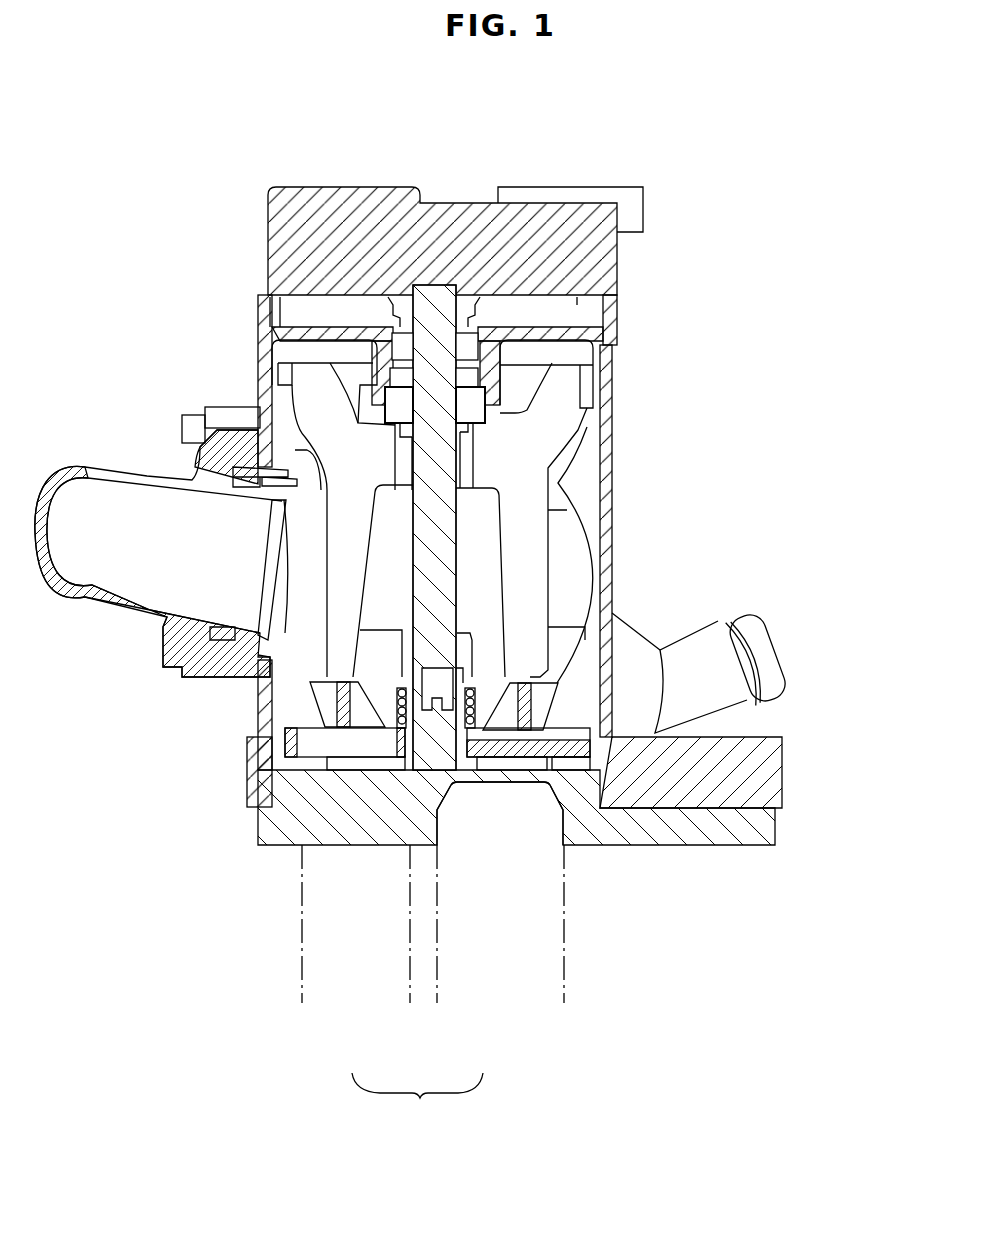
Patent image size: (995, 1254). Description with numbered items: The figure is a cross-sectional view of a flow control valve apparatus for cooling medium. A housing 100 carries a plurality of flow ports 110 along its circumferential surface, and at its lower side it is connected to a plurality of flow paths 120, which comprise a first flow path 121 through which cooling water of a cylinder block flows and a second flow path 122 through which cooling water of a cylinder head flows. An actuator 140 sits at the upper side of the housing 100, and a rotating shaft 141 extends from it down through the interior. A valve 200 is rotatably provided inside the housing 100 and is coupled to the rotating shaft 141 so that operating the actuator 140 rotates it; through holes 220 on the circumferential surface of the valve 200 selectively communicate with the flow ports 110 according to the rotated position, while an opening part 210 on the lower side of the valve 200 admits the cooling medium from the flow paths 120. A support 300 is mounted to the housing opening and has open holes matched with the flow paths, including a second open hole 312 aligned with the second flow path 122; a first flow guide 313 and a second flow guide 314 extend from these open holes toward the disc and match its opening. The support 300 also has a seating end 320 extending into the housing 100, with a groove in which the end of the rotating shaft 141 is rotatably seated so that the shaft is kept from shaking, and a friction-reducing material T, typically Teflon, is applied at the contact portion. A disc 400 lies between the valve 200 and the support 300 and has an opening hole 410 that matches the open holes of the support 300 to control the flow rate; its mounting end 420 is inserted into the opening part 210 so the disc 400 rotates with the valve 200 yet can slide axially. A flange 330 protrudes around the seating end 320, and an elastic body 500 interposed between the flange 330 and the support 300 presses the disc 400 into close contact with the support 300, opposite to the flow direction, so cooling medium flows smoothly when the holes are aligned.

The housing 100 is at (618, 397).
The flow ports 110 is at (102, 503).
The flow paths 120 is at (417, 1101).
The first flow path 121 is at (410, 918).
The second flow path 122 is at (437, 918).
The actuator 140 is at (455, 225).
The rotating shaft 141 is at (440, 456).
The valve 200 is at (320, 413).
The opening part 210 is at (327, 707).
The through holes 220 is at (565, 542).
The support 300 is at (292, 817).
The second open hole 312 is at (450, 798).
The first flow guide 313 is at (322, 760).
The second flow guide 314 is at (547, 760).
The seating end 320 is at (437, 748).
The flange 330 is at (472, 700).
The disc 400 is at (577, 750).
The opening hole 410 is at (290, 743).
The mounting end 420 is at (325, 687).
The elastic body 500 is at (492, 705).
The material T is at (463, 680).